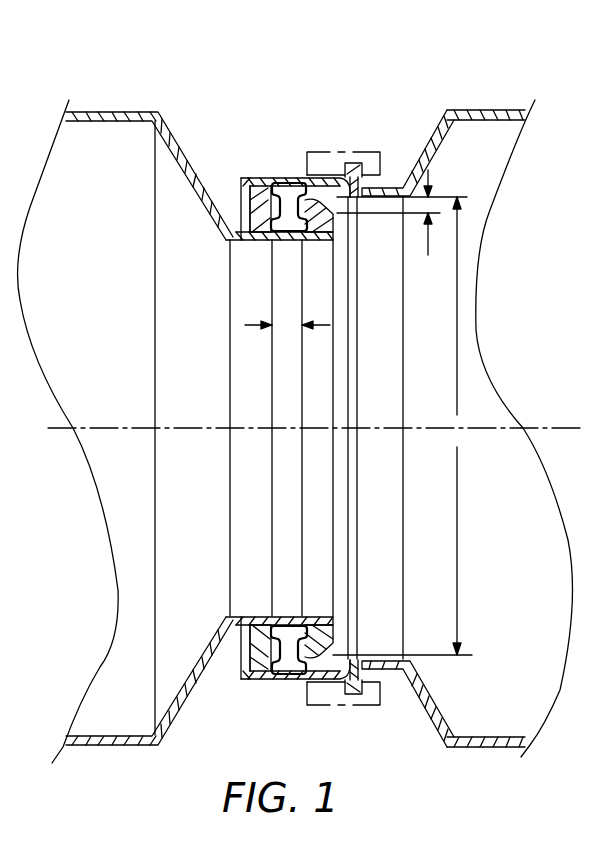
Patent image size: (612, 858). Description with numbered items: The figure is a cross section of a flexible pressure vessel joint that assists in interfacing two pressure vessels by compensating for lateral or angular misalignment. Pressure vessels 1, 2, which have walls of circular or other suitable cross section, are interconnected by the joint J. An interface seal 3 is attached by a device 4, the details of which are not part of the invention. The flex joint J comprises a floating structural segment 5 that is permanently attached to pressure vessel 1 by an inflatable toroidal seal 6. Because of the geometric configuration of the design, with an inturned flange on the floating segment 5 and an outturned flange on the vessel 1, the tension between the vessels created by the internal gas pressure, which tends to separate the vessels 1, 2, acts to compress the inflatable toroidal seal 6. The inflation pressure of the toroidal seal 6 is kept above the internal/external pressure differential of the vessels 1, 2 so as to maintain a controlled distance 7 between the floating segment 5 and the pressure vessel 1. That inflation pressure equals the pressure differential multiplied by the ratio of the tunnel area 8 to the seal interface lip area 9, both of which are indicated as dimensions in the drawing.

The pressure vessel 1 is at (133, 112).
The pressure vessel 2 is at (472, 110).
The interface seal 3 is at (362, 164).
The device 4 is at (323, 152).
The floating structural segment 5 is at (297, 178).
The inflatable toroidal seal 6 is at (283, 183).
The controlled distance 7 is at (287, 326).
The tunnel area 8 is at (402, 426).
The seal interface lip area 9 is at (402, 229).
The joint J is at (266, 684).